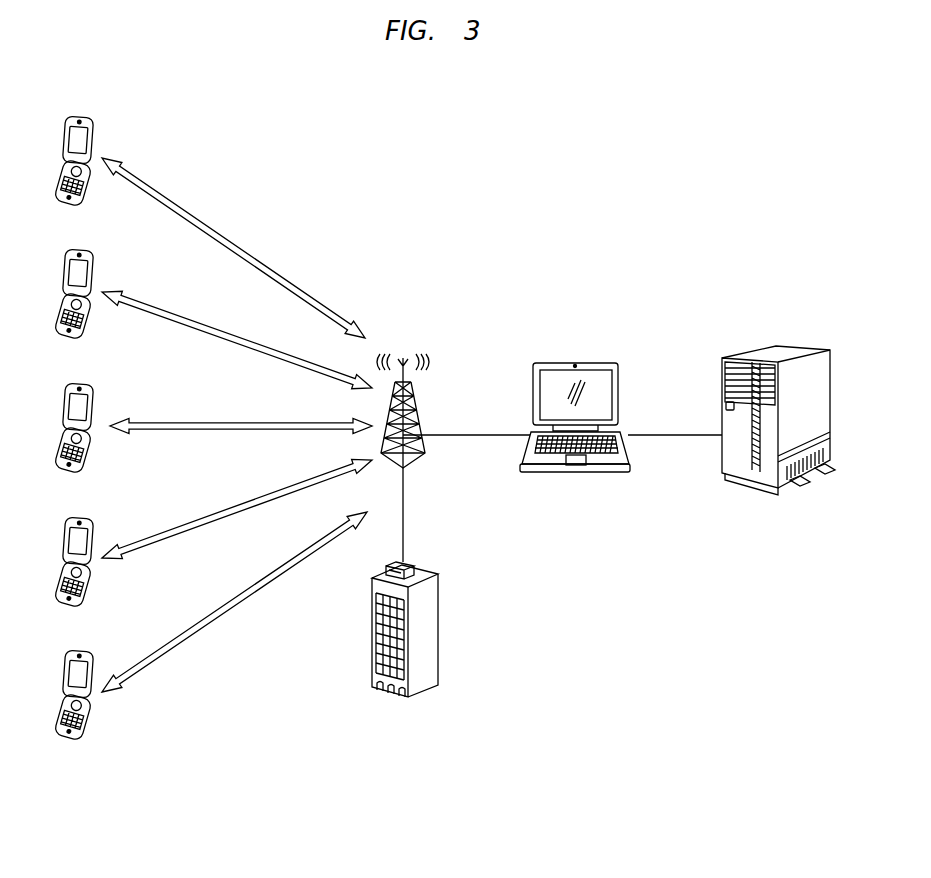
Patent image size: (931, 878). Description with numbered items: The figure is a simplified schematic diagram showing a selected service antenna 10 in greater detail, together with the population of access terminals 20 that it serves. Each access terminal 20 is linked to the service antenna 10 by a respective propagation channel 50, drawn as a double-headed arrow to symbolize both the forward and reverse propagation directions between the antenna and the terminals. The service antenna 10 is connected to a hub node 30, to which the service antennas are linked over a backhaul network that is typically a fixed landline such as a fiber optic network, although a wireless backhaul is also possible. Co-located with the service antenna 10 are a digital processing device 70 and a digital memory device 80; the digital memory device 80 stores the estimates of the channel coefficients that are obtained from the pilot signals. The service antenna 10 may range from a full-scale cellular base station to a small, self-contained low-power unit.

The service antenna 10 is at (432, 358).
The access terminal 20 is at (96, 420).
The hub node 30 is at (440, 583).
The propagation channel 50 is at (250, 256).
The digital processing device 70 is at (622, 370).
The digital memory device 80 is at (832, 372).